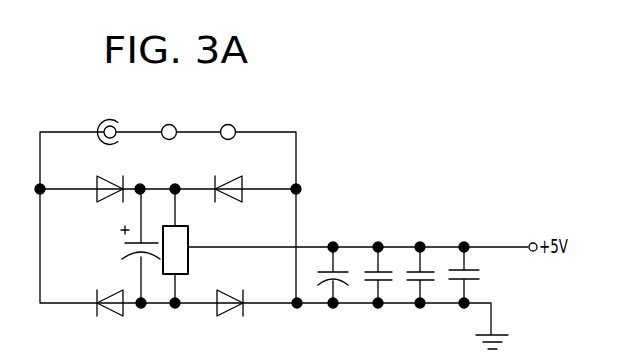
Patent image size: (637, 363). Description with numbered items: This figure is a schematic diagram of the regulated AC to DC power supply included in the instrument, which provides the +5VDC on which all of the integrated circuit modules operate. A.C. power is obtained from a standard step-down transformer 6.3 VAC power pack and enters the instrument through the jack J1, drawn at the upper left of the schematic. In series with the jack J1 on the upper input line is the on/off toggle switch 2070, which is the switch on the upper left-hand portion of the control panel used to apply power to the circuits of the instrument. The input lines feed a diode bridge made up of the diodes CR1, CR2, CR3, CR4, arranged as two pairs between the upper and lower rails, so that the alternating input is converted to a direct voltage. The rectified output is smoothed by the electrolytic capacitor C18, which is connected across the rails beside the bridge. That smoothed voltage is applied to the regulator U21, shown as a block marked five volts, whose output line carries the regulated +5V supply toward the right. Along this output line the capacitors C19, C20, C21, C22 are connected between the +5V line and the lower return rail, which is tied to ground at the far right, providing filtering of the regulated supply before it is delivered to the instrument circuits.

The jack J1 is at (107, 117).
The on/off toggle switch 2070 is at (195, 132).
The diode CR1 is at (109, 174).
The diode CR2 is at (226, 174).
The diode CR3 is at (105, 319).
The diode CR4 is at (232, 319).
The electrolytic capacitor C18 is at (122, 246).
The 5V voltage regulator U21 is at (176, 268).
The capacitor C19 is at (331, 258).
The capacitor C20 is at (377, 292).
The capacitor C21 is at (419, 258).
The capacitor C22 is at (462, 292).